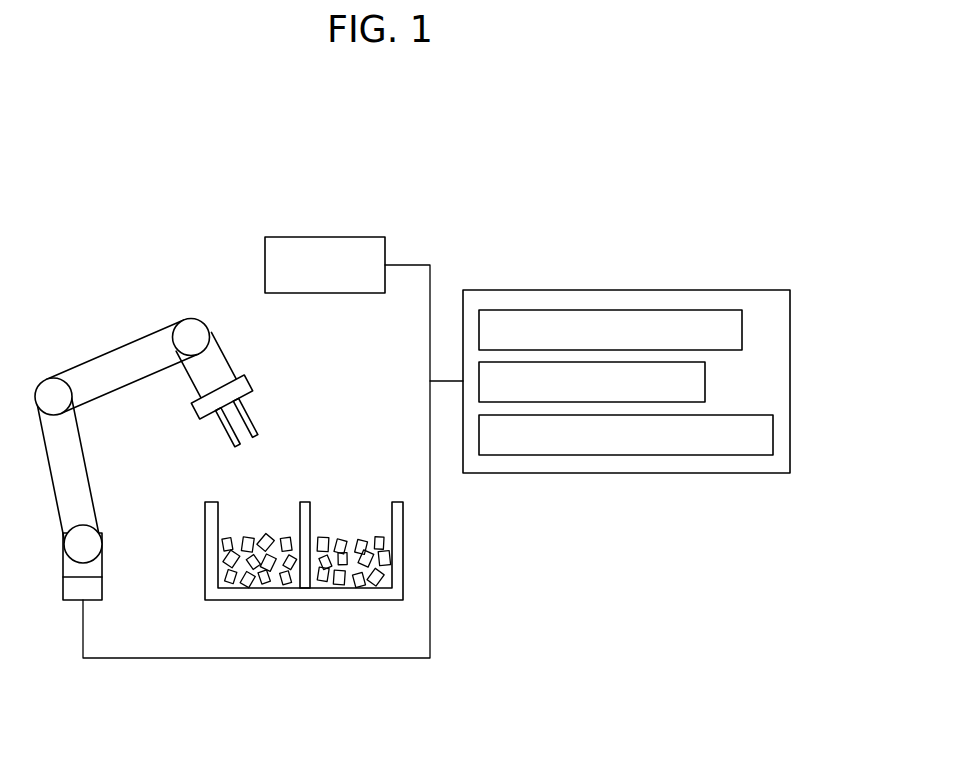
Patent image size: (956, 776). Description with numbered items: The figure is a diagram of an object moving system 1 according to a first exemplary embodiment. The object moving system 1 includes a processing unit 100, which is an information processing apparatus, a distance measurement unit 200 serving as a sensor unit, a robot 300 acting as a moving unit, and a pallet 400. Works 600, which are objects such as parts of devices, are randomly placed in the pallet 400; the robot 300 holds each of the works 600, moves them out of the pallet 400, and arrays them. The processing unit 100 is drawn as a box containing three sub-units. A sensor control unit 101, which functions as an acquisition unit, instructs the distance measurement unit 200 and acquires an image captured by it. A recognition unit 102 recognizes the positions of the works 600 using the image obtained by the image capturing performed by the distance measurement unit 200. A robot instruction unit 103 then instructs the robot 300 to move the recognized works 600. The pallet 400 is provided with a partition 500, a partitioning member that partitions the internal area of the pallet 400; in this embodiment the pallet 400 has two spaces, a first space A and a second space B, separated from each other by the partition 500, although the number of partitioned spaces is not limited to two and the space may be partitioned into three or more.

The object moving system 1 is at (78, 212).
The processing unit 100 is at (568, 289).
The sensor control unit 101 is at (727, 310).
The recognition unit 102 is at (705, 382).
The robot instruction unit 103 is at (742, 456).
The distance measurement unit 200 is at (330, 235).
The robot 300 is at (97, 362).
The pallet 400 is at (233, 600).
The partition 500 is at (305, 502).
The works 600 is at (363, 532).